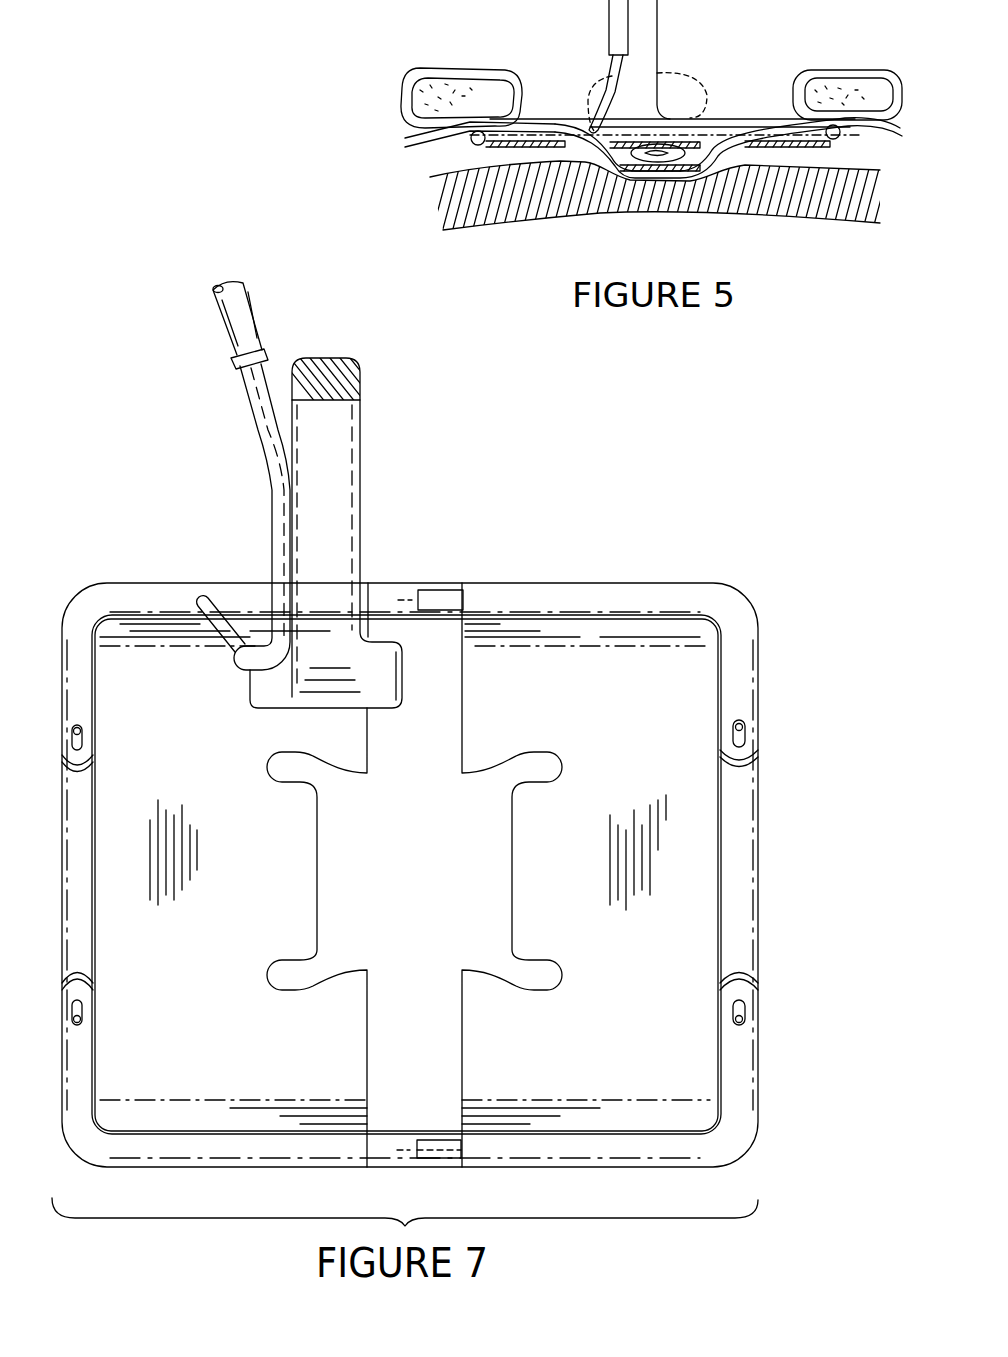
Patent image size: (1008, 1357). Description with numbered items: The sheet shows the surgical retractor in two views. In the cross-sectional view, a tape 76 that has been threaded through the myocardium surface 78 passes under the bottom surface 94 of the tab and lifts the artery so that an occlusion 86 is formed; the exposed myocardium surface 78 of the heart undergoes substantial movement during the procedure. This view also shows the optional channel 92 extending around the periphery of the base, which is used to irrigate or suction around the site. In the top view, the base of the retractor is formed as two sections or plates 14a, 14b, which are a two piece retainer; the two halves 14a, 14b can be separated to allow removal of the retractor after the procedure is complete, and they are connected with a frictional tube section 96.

In FIG. 7, the plate 14a is at (272, 871).
In FIG. 7, the plate 14b is at (578, 871).
In FIG. 5, the tape 76 is at (695, 178).
In FIG. 5, the myocardium surface 78 is at (807, 165).
In FIG. 5, the occlusion 86 is at (652, 161).
In FIG. 5, the channel 92 is at (478, 148).
In FIG. 5, the bottom surface 94 is at (706, 158).
In FIG. 7, the frictional tube section 96 is at (440, 590).